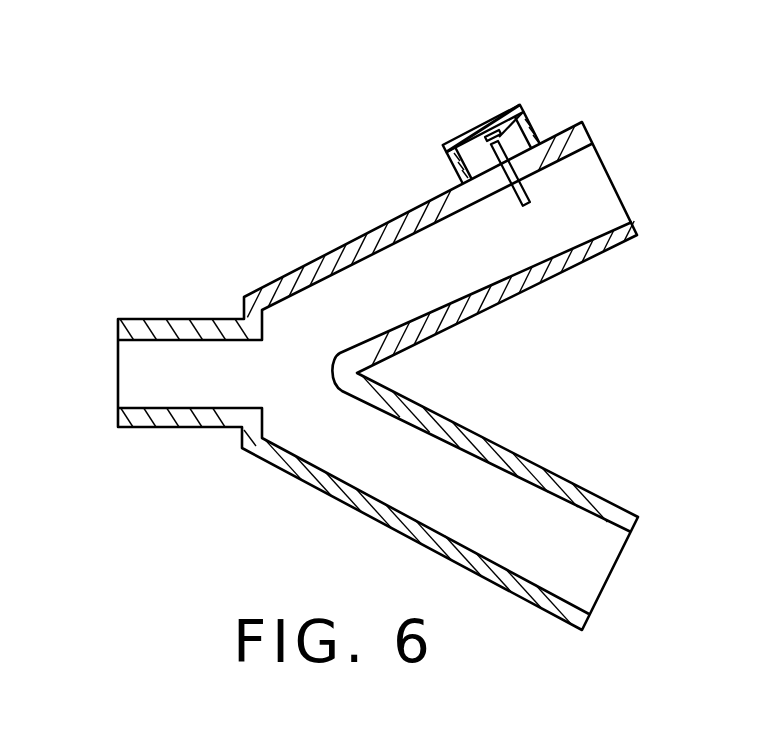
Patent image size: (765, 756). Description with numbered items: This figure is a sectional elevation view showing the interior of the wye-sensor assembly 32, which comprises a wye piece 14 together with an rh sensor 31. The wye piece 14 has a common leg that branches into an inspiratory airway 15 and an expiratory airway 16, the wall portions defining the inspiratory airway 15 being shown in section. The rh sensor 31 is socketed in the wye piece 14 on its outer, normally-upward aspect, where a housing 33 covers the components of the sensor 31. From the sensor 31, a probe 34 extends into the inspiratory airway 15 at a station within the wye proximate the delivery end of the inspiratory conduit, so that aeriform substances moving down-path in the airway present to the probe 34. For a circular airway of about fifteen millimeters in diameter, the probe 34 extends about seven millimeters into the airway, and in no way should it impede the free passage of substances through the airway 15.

The wye piece 14 is at (165, 320).
The inspiratory airway 15 is at (600, 198).
The expiratory airway 16 is at (603, 562).
The rh sensor 31 is at (528, 103).
The wye-sensor assembly 32 is at (210, 508).
The housing 33 is at (455, 140).
The probe 34 is at (524, 186).